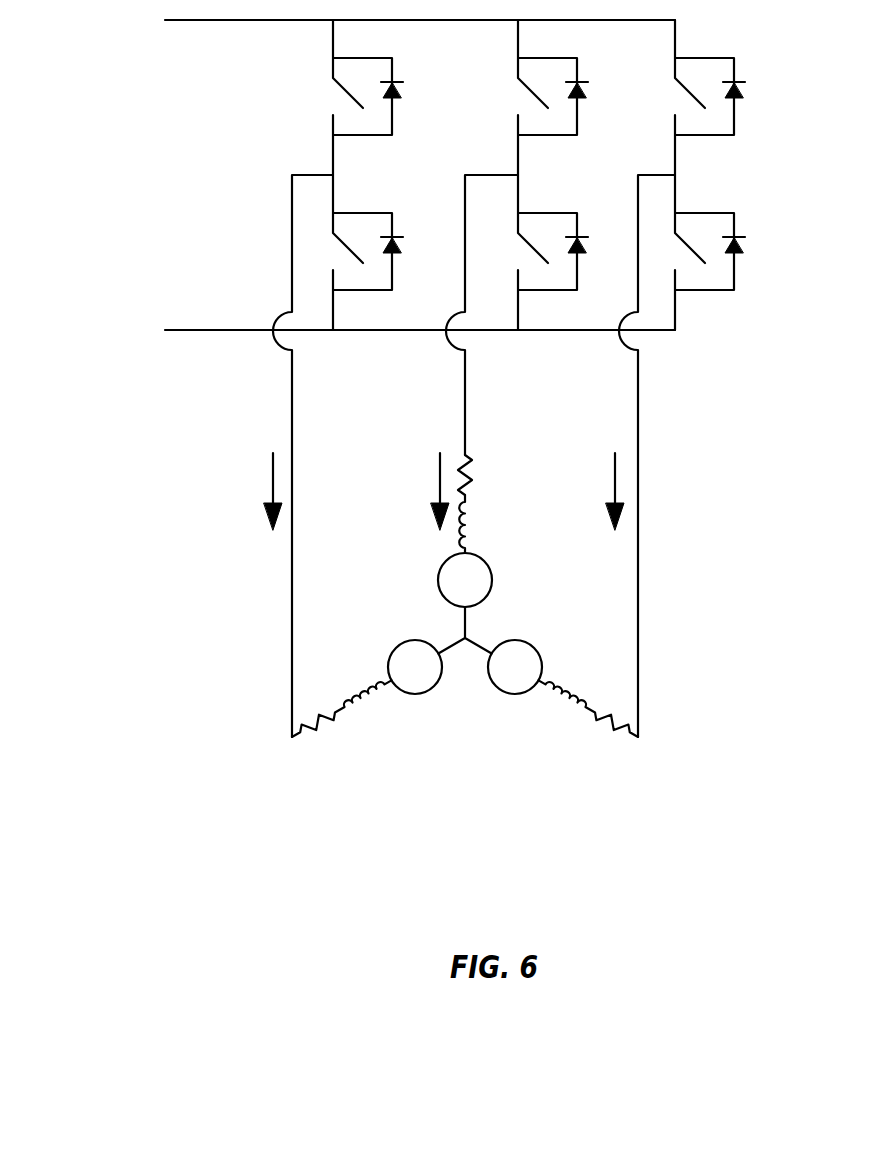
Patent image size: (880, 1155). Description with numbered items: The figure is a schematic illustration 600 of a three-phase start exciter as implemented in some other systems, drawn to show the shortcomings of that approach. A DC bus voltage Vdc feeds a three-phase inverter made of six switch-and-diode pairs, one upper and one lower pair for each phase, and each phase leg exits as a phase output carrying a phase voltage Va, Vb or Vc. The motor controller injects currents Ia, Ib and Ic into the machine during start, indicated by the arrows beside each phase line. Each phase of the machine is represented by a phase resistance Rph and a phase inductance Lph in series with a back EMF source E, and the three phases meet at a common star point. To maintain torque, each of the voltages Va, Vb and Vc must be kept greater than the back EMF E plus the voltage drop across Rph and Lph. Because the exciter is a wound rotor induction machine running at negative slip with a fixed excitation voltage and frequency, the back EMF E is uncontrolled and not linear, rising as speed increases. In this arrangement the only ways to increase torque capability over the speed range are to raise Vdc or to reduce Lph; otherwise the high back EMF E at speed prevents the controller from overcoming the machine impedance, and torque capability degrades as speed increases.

The schematic illustration 600 is at (138, 942).
The DC voltage Vdc is at (409, 175).
The phase A voltage Va is at (282, 456).
The phase B voltage Vb is at (461, 315).
The phase C voltage Vc is at (631, 456).
The phase A current Ia is at (258, 491).
The phase B current Ib is at (426, 491).
The phase C current Ic is at (600, 491).
The phase resistance Rph is at (496, 475).
The phase inductance Lph is at (494, 524).
The back EMF E is at (465, 623).